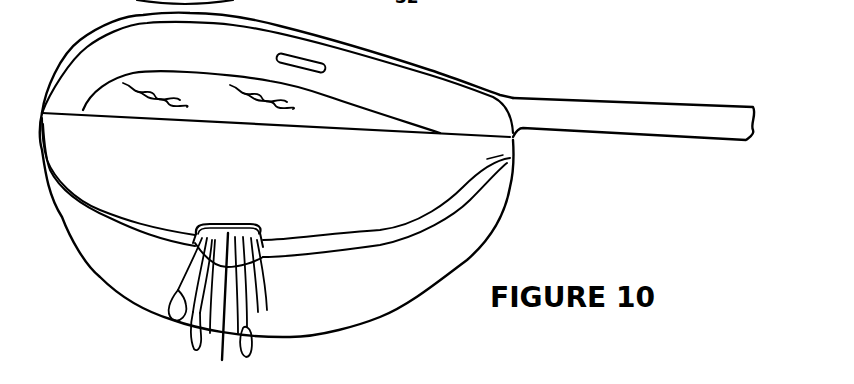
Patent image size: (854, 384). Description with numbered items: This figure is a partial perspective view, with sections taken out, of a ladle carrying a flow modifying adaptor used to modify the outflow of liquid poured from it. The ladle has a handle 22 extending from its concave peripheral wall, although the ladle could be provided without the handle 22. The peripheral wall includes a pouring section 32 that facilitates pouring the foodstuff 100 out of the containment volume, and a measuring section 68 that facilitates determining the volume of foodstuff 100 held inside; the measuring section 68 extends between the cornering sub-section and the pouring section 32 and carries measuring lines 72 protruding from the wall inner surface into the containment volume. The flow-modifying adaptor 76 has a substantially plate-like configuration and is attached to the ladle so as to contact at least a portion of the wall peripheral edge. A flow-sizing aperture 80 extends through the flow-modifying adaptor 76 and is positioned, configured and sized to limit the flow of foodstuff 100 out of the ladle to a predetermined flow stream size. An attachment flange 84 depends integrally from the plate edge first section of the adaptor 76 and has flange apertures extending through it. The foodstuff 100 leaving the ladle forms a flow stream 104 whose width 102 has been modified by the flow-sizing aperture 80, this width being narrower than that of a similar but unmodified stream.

The handle 22 is at (662, 115).
The pouring section 32 is at (113, 266).
The measuring section 68 is at (432, 92).
The measuring lines 72 is at (328, 68).
The flow-modifying adaptor 76 is at (513, 158).
The flow-sizing aperture 80 is at (258, 262).
The attachment flange 84 is at (467, 200).
The foodstuff 100 is at (192, 342).
The width of flow stream 102 is at (173, 316).
The flow stream 104 is at (253, 348).